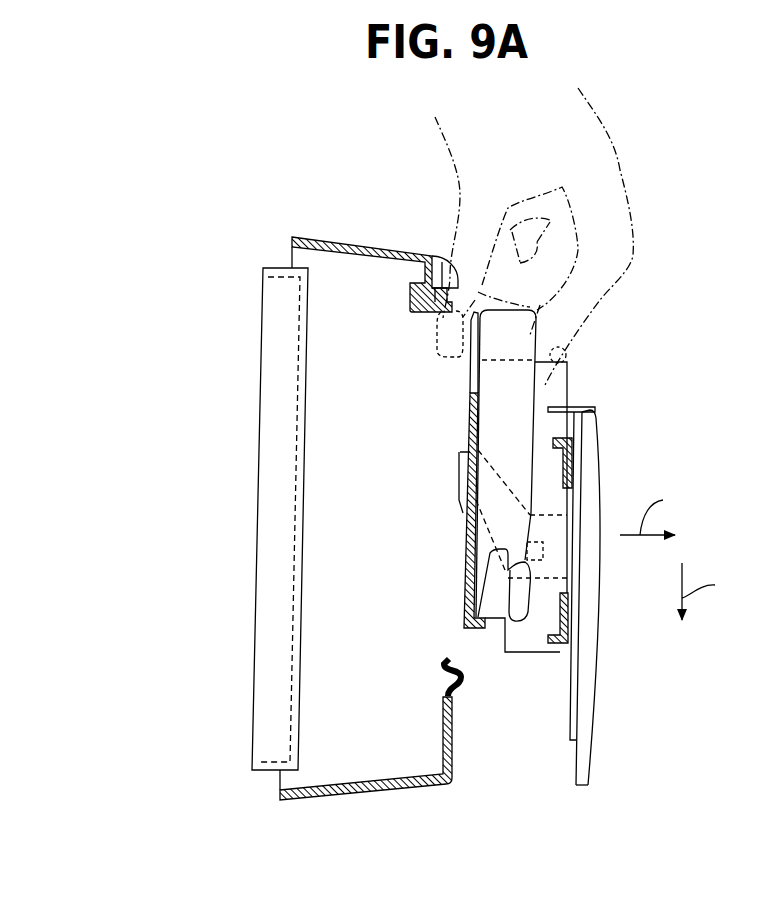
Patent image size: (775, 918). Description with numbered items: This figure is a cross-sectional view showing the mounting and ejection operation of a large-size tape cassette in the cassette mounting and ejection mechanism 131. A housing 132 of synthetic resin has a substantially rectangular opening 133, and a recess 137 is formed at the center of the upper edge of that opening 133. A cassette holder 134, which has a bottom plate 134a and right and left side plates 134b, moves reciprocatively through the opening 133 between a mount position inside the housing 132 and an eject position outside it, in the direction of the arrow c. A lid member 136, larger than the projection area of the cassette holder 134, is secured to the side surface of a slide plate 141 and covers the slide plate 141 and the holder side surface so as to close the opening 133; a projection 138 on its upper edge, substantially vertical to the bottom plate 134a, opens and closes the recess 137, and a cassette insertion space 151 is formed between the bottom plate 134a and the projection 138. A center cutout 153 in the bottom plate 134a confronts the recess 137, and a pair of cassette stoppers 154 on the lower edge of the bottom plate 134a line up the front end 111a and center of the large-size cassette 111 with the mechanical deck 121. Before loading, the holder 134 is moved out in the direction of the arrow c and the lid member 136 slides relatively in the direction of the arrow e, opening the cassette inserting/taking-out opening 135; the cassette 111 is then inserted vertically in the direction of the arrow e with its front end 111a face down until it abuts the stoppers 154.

The large-size cassette 111 is at (491, 440).
The front end 111a is at (466, 595).
The mechanical deck 121 is at (268, 493).
The cassette mounting and ejection mechanism 131 is at (582, 797).
The housing 132 is at (327, 241).
The opening 133 is at (451, 325).
The cassette holder 134 is at (463, 425).
The bottom plate 134a is at (467, 407).
The side plates 134b is at (538, 382).
The cassette inserting/taking-out opening 135 is at (545, 336).
The lid member 136 is at (598, 558).
The recess 137 is at (432, 256).
The projection 138 is at (574, 408).
The slide plate 141 is at (575, 727).
The cassette insertion space 151 is at (547, 525).
The center cutout 153 is at (478, 333).
The cassette stoppers 154 is at (478, 605).
The arrow c is at (653, 512).
The arrow e is at (712, 591).